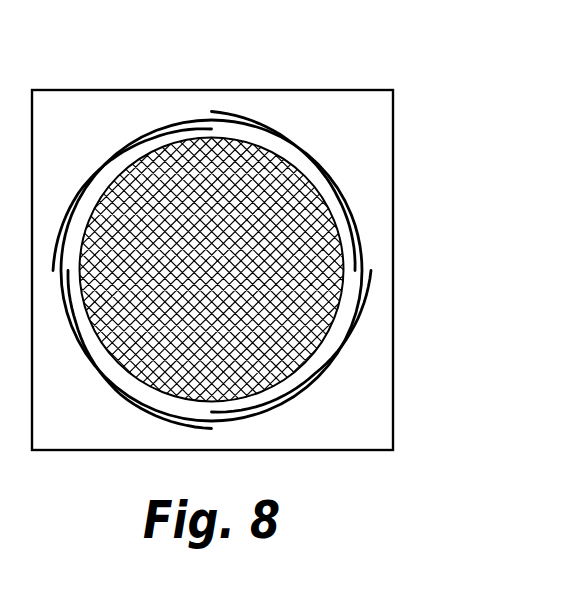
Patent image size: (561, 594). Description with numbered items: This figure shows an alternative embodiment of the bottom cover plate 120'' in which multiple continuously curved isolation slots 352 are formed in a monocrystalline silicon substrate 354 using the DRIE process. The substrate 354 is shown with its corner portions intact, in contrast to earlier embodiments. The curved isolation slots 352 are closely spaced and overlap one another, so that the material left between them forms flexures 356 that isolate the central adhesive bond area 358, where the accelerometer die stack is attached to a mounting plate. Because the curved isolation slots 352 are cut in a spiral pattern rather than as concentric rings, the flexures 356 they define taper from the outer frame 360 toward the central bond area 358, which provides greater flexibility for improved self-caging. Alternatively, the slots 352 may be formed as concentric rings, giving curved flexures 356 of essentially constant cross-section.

The bottom cover plate 120'' is at (277, 237).
The curved isolation slots 352 is at (372, 295).
The monocrystalline silicon substrate 354 is at (393, 142).
The flexures 356 is at (372, 273).
The central adhesive bond area 358 is at (340, 216).
The outer frame 360 is at (393, 413).